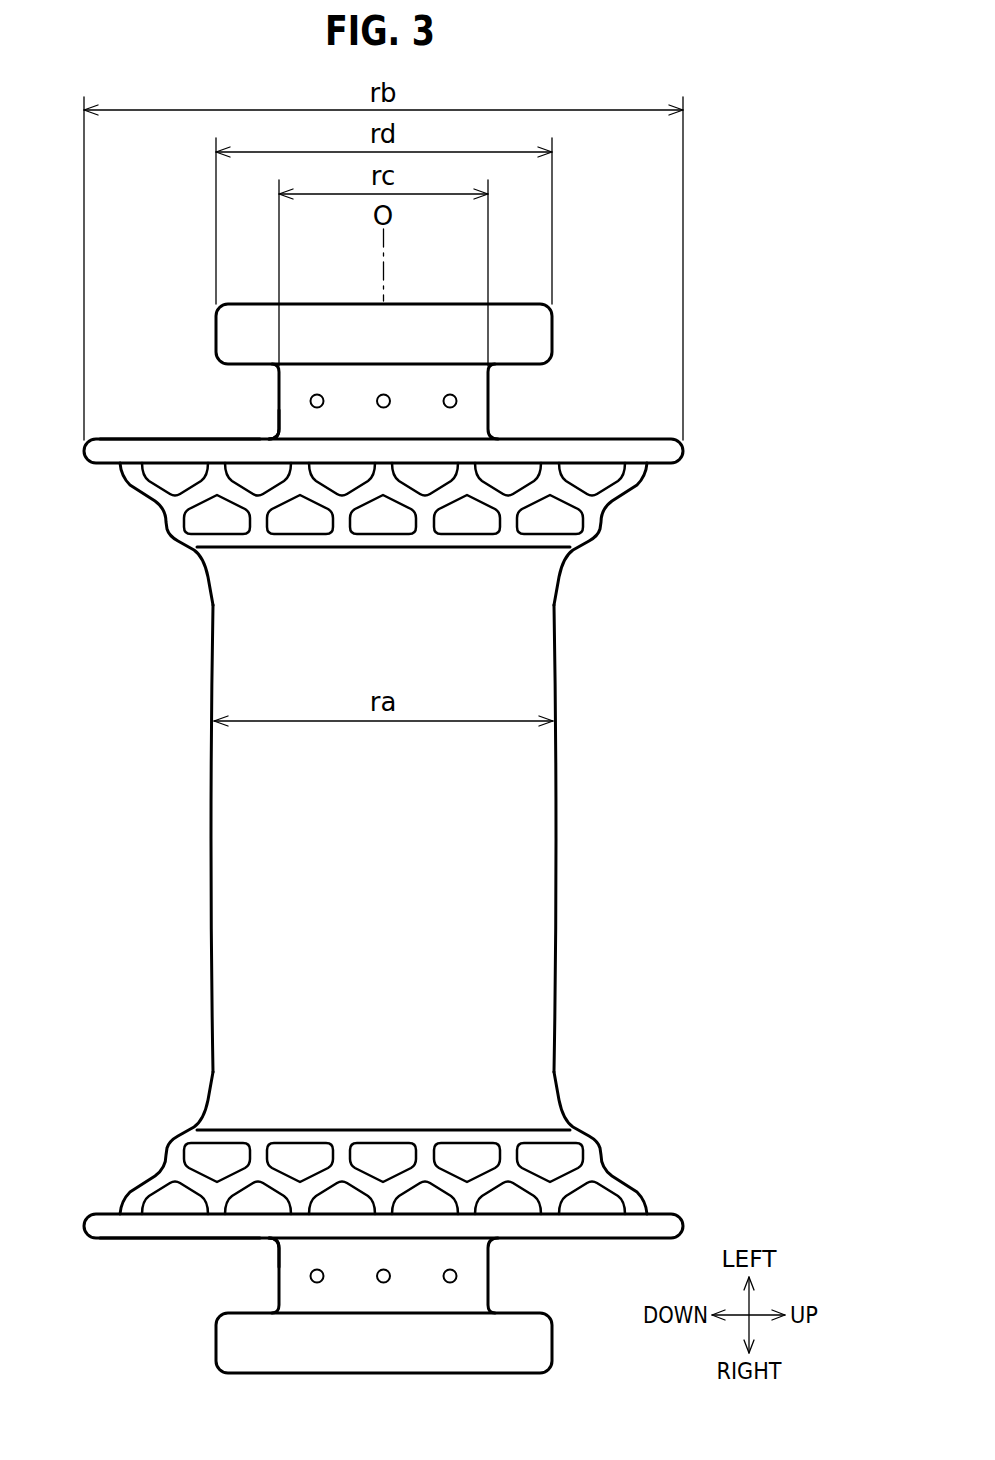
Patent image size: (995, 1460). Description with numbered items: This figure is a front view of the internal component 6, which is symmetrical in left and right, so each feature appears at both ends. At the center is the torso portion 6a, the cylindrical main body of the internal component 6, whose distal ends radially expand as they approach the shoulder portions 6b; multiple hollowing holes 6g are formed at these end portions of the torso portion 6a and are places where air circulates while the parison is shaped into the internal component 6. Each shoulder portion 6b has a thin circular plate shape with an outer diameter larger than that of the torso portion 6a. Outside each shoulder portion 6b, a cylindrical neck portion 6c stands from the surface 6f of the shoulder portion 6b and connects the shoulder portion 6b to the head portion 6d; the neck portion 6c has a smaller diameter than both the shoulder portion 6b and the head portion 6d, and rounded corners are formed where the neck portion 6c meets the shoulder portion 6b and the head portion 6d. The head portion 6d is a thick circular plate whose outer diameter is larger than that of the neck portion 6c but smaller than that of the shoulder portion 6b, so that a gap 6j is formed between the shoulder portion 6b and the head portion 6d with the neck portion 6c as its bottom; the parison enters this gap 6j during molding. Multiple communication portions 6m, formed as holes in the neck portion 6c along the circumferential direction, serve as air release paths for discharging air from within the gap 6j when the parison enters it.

The internal component 6 is at (428, 838).
The torso portion 6a is at (553, 817).
The shoulder portion 6b is at (683, 450).
The neck portion 6c is at (488, 377).
The head portion 6d is at (552, 330).
The surface of the shoulder portion 6f is at (140, 438).
The hollowing holes 6g is at (327, 488).
The gap 6j is at (262, 403).
The communication portion 6m is at (457, 401).